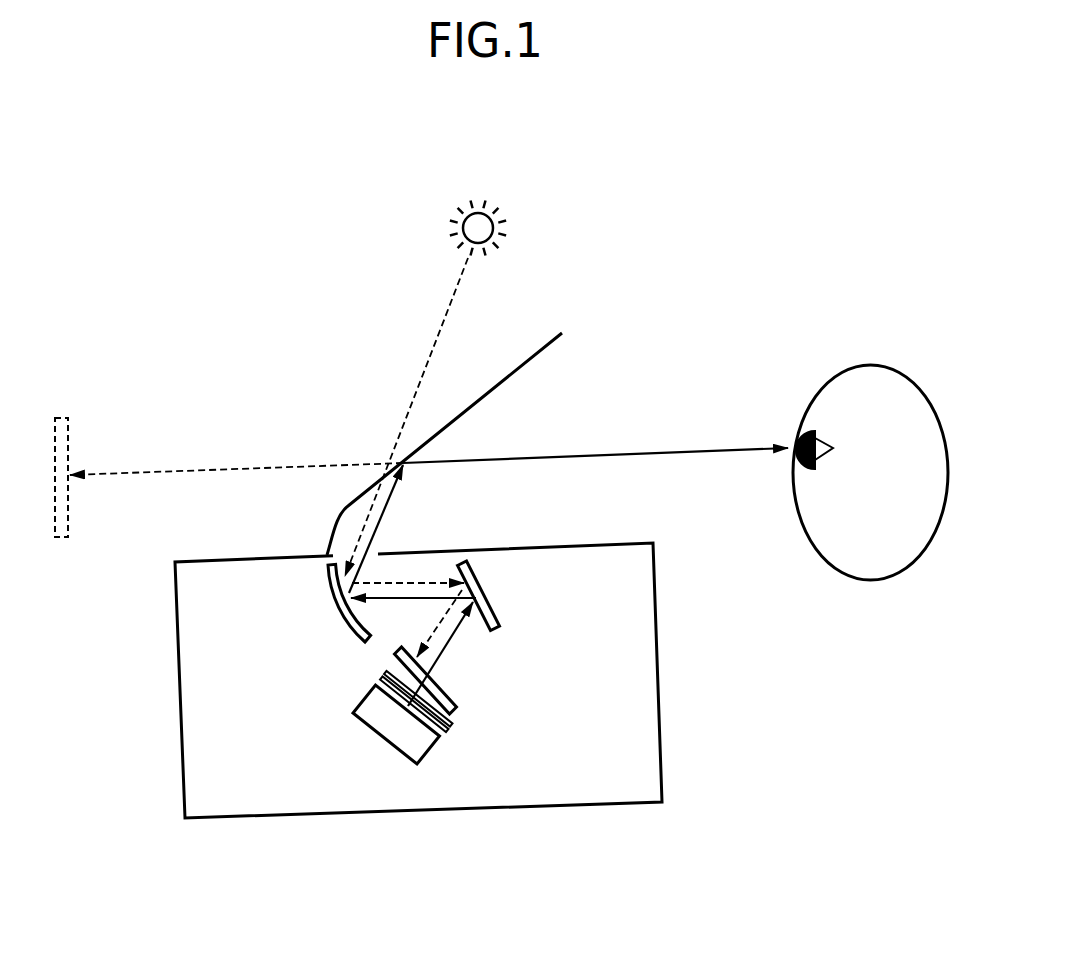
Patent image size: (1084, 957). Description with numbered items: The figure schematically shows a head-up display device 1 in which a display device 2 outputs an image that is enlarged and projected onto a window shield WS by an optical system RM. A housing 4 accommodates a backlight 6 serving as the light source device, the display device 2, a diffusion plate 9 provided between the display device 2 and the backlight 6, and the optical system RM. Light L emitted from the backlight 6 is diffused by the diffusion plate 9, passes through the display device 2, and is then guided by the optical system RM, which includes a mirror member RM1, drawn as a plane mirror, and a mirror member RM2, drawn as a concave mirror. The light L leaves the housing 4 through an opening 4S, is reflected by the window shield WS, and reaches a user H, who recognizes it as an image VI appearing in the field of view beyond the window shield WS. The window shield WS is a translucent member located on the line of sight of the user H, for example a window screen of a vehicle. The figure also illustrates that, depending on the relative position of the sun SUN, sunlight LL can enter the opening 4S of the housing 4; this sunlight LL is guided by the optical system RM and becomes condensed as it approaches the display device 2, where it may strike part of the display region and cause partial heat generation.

The head-up display device 1 is at (451, 680).
The display device 2 is at (455, 710).
The housing 4 is at (663, 755).
The opening 4S is at (390, 537).
The backlight 6 is at (355, 712).
The diffusion plate 9 is at (438, 736).
The optical system RM is at (402, 630).
The mirror member RM1 is at (487, 593).
The mirror member RM2 is at (340, 610).
The light L is at (627, 457).
The sunlight LL is at (438, 330).
The window shield WS is at (483, 392).
The image VI is at (60, 418).
The sun SUN is at (509, 192).
The user H is at (868, 588).